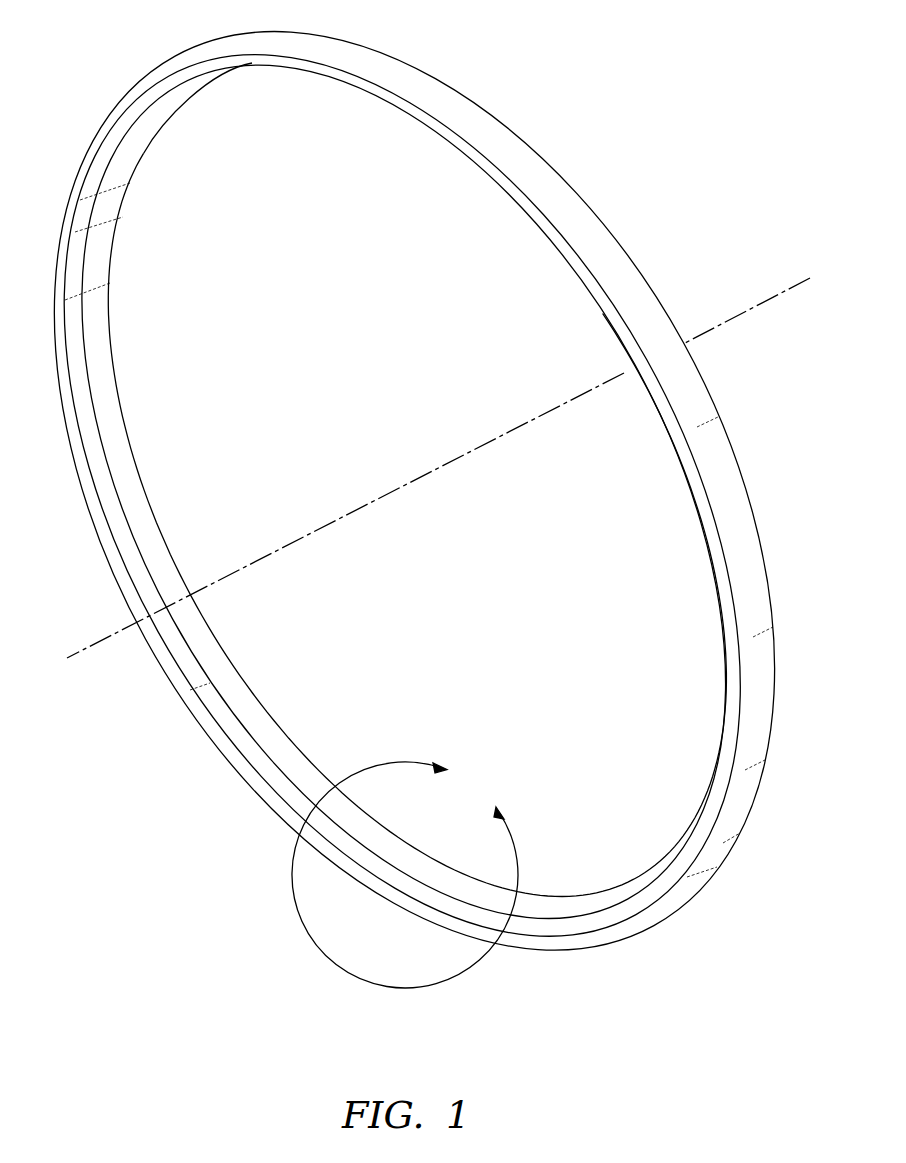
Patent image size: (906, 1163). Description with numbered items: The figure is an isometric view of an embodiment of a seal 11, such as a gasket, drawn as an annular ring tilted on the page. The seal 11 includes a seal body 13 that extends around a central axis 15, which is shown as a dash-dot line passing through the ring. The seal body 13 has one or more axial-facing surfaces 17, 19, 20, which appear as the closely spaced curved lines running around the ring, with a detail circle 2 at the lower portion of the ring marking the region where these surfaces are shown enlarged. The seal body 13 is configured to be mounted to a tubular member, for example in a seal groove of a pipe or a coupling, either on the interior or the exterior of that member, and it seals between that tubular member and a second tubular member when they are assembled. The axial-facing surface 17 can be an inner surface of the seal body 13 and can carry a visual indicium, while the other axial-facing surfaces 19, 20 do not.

The seal 11 is at (453, 537).
The seal body 13 is at (588, 232).
The axis 15 is at (84, 645).
The axial-facing surface 17 is at (380, 871).
The axial-facing surface 19 is at (398, 902).
The axial-facing surface 20 is at (407, 843).
The detail view indicator 2 is at (405, 875).